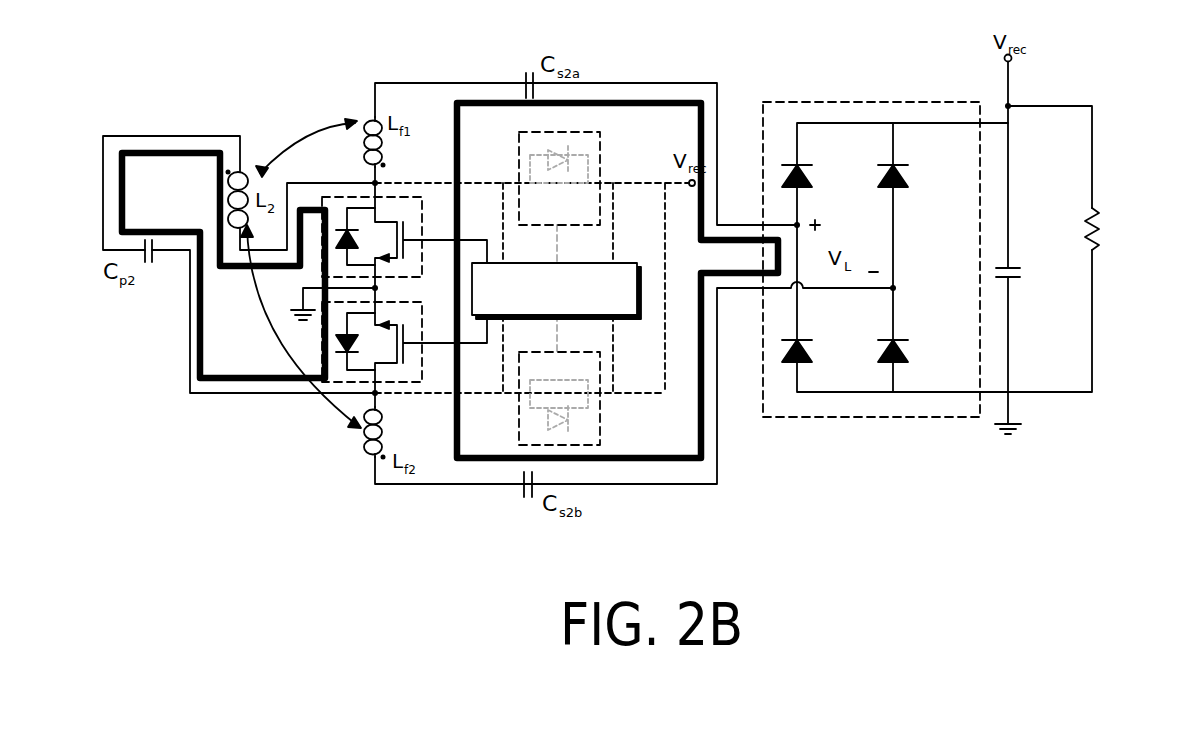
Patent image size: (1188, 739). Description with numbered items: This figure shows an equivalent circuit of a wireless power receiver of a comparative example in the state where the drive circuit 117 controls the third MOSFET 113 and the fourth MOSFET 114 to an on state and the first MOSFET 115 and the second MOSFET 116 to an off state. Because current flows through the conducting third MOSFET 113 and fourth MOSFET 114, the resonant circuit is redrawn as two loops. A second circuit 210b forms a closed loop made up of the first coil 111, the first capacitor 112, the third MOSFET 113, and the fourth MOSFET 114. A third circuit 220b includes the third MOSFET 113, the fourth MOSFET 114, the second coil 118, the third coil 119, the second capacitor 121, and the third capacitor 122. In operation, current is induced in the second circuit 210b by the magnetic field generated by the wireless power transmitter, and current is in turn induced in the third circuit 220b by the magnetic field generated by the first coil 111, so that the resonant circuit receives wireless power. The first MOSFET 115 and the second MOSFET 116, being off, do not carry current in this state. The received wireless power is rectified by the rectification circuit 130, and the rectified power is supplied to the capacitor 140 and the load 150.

The first coil 111 is at (228, 192).
The first capacitor 112 is at (152, 262).
The third MOSFET 113 is at (340, 197).
The fourth MOSFET 114 is at (355, 383).
The first MOSFET 115 is at (600, 153).
The second MOSFET 116 is at (600, 427).
The drive circuit 117 is at (635, 262).
The second coil 118 is at (392, 143).
The third coil 119 is at (392, 433).
The second capacitor 121 is at (528, 74).
The third capacitor 122 is at (528, 500).
The rectification circuit 130 is at (868, 101).
The capacitor 140 is at (1022, 273).
The load 150 is at (1102, 230).
The second circuit 210b is at (253, 382).
The third circuit 220b is at (652, 462).